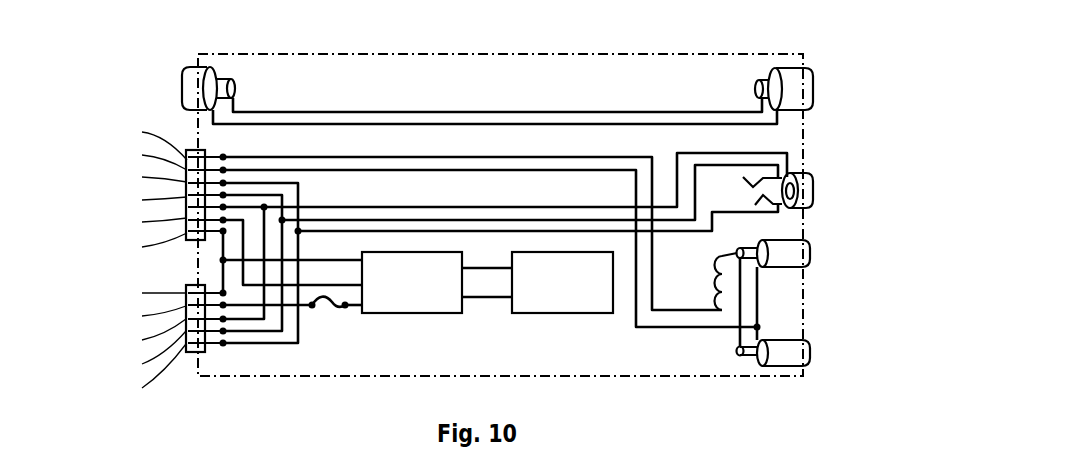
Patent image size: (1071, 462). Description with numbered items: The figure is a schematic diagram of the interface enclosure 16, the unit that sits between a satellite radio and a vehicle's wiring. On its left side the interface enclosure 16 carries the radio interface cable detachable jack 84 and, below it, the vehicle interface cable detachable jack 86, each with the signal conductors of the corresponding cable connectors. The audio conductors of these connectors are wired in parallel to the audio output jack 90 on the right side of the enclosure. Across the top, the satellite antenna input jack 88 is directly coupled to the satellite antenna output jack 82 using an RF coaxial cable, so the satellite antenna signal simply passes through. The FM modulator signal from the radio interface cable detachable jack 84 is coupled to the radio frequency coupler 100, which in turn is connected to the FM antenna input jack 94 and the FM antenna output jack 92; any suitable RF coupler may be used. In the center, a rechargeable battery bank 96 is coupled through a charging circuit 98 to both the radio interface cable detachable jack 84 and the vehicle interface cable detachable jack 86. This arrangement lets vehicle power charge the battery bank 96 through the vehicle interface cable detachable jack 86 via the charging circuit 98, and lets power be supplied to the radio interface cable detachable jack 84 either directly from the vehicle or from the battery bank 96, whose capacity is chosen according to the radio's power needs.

The interface enclosure 16 is at (468, 53).
The satellite antenna output jack 82 is at (182, 72).
The radio interface cable detachable jack 84 is at (186, 241).
The vehicle interface cable detachable jack 86 is at (188, 353).
The satellite antenna input jack 88 is at (812, 70).
The audio output jack 90 is at (815, 172).
The FM antenna output jack 92 is at (800, 268).
The FM antenna input jack 94 is at (803, 367).
The rechargeable battery bank 96 is at (557, 313).
The charging circuit 98 is at (417, 313).
The radio frequency coupler 100 is at (730, 275).